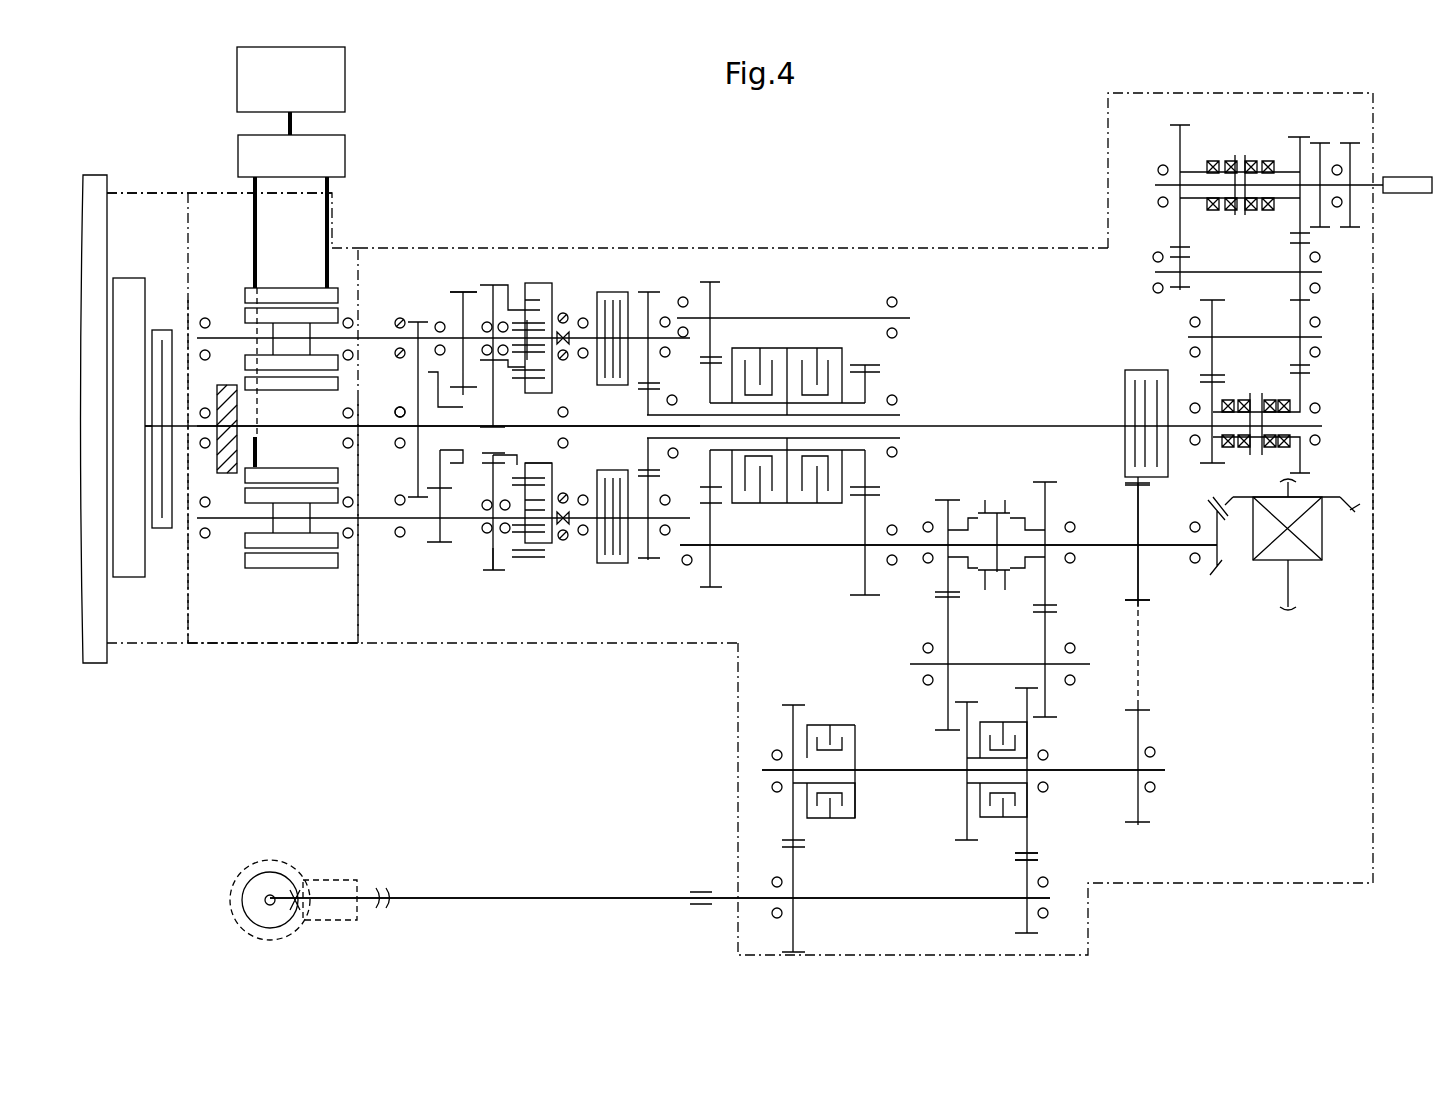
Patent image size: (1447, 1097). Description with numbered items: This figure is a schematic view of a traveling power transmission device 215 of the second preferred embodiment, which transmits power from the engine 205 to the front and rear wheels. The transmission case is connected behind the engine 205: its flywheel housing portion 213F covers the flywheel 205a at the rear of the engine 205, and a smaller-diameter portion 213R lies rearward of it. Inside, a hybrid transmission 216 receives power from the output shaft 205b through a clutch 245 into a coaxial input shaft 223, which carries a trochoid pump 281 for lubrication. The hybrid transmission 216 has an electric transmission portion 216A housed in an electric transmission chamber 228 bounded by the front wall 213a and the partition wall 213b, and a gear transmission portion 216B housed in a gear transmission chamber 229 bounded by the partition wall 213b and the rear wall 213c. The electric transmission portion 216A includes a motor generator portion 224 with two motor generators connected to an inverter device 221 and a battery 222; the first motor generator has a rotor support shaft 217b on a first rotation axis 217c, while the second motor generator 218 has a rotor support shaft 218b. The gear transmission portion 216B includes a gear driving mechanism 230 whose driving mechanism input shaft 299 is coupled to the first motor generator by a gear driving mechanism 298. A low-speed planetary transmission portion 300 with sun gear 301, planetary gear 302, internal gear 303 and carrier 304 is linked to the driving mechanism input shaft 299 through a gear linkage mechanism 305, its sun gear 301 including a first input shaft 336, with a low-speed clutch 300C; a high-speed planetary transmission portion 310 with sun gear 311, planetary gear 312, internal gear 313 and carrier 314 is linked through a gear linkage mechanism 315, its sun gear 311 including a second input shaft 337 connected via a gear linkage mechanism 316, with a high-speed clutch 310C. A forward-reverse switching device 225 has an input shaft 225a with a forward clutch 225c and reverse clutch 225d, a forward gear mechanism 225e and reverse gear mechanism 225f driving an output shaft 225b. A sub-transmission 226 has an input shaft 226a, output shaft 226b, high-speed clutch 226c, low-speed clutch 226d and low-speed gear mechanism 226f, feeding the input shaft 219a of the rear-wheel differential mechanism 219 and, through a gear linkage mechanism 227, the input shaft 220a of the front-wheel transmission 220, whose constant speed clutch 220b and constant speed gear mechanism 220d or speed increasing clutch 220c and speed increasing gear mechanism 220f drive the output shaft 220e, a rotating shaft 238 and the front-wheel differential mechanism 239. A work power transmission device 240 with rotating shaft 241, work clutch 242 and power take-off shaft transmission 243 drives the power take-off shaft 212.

The engine 205 is at (108, 237).
The flywheel 205a is at (147, 303).
The output shaft 205b is at (160, 440).
The power take-off shaft 212 is at (1410, 195).
The flywheel housing portion 213F is at (223, 193).
The portion of the transmission case 213R is at (935, 248).
The front wall 213a is at (188, 610).
The partition wall 213b is at (360, 613).
The rear wall 213c is at (1375, 458).
The traveling power transmission device 215 is at (811, 169).
The hybrid transmission 216 is at (556, 623).
The electric transmission portion 216A is at (284, 630).
The gear transmission portion 216B is at (702, 614).
The rotor support shaft 217b is at (288, 332).
The first rotation axis 217c is at (263, 383).
The second motor generator 218 is at (307, 563).
The rotor support shaft 218b is at (293, 520).
The rear-wheel differential mechanism 219 is at (1260, 587).
The input shaft 219a is at (1162, 545).
The front-wheel transmission 220 is at (850, 701).
The input shaft 220a is at (898, 768).
The constant speed clutch 220b is at (820, 820).
The speed increasing clutch 220c is at (998, 820).
The constant speed gear mechanism 220d is at (792, 730).
The output shaft 220e is at (932, 898).
The speed increasing gear mechanism 220f is at (1030, 840).
The inverter device 221 is at (291, 289).
The battery 222 is at (291, 79).
The input shaft 223 is at (268, 432).
The motor generator portion 224 is at (456, 269).
The forward-reverse switching device 225 is at (816, 283).
The input shaft 225a is at (873, 415).
The output shaft 225b is at (747, 547).
The forward clutch 225c is at (832, 348).
The reverse clutch 225d is at (768, 348).
The forward gear mechanism 225e is at (865, 575).
The reverse gear mechanism 225f is at (712, 282).
The sub-transmission 226 is at (981, 492).
The input shaft 226a is at (930, 545).
The output shaft 226b is at (1112, 540).
The high-speed clutch 226c is at (985, 512).
The low-speed clutch 226d is at (1020, 512).
The low-speed gear mechanism 226f is at (1065, 614).
The gear linkage mechanism 227 is at (1165, 729).
The electric transmission chamber 228 is at (235, 241).
The gear transmission chamber 229 is at (1060, 293).
The gear driving mechanism 230 is at (658, 266).
The rotating shaft 238 is at (562, 898).
The front-wheel differential mechanism 239 is at (270, 860).
The work power transmission device 240 is at (1109, 350).
The rotating shaft 241 is at (1122, 362).
The work clutch 242 is at (1150, 370).
The power take-off shaft transmission 243 is at (1142, 212).
The clutch 245 is at (158, 330).
The trochoid pump 281 is at (228, 380).
The gear driving mechanism 298 is at (400, 321).
The driving mechanism input shaft 299 is at (400, 408).
The low-speed planetary transmission portion 300 is at (498, 590).
The low-speed clutch 300C is at (612, 565).
The sun gear 301 is at (567, 512).
The planetary gear 302 is at (545, 558).
The internal gear 303 is at (540, 560).
The carrier 304 is at (545, 472).
The gear linkage mechanism 305 is at (493, 548).
The high-speed planetary transmission portion 310 is at (533, 271).
The high-speed clutch 310C is at (628, 290).
The sun gear 311 is at (550, 320).
The planetary gear 312 is at (540, 375).
The internal gear 313 is at (545, 280).
The carrier 314 is at (508, 282).
The gear linkage mechanism 315 is at (475, 282).
The gear linkage mechanism 316 is at (465, 495).
The first input shaft 336 is at (420, 520).
The second input shaft 337 is at (454, 273).